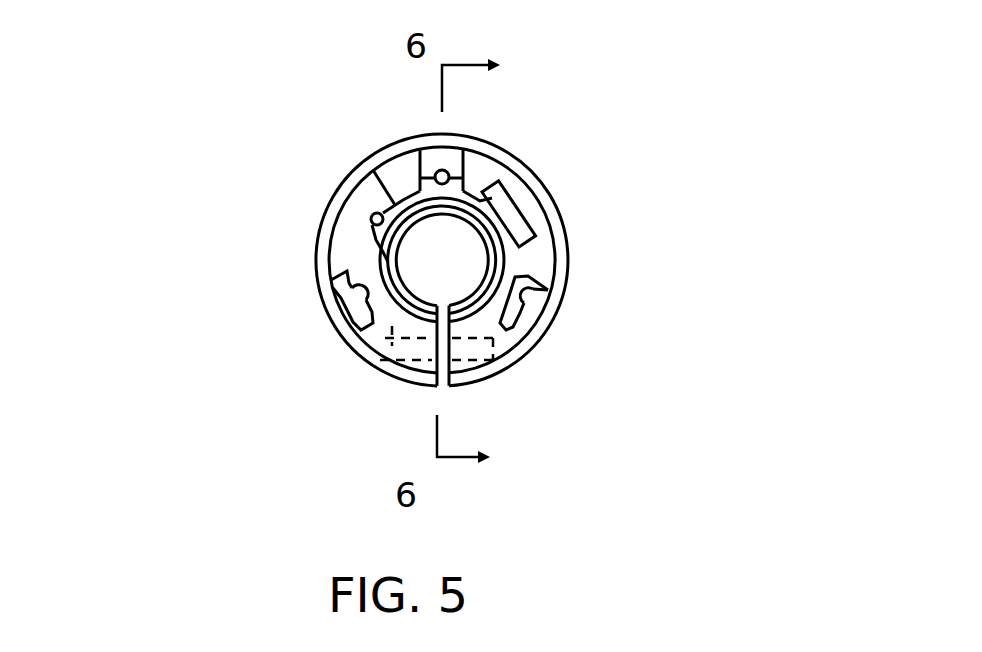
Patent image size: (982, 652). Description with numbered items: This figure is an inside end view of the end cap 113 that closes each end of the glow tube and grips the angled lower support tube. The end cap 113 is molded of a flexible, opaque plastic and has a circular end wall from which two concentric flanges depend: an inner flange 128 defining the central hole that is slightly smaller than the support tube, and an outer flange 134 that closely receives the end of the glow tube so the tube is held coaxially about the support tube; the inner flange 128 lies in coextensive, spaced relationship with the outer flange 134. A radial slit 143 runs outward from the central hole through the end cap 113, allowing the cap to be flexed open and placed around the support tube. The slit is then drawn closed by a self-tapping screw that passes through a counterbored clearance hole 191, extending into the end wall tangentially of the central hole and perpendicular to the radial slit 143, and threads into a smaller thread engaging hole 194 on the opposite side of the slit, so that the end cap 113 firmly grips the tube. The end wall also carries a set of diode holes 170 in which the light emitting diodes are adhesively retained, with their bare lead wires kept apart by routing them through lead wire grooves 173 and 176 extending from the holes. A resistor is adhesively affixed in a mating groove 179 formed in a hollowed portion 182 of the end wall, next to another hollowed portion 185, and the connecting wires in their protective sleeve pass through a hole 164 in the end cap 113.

The end cap 113 is at (594, 117).
The inner flange 128 is at (398, 170).
The outer flange 134 is at (557, 243).
The radial slit 143 is at (437, 384).
The hole 164 is at (371, 220).
The diode holes 170 is at (446, 171).
The lead wire groove 173 is at (407, 163).
The lead wire groove 176 is at (466, 176).
The mating groove 179 is at (537, 232).
The hollowed portion 182 is at (547, 266).
The hollowed portion 185 is at (373, 190).
The counterbored clearance hole 191 is at (372, 360).
The thread engaging hole 194 is at (490, 370).